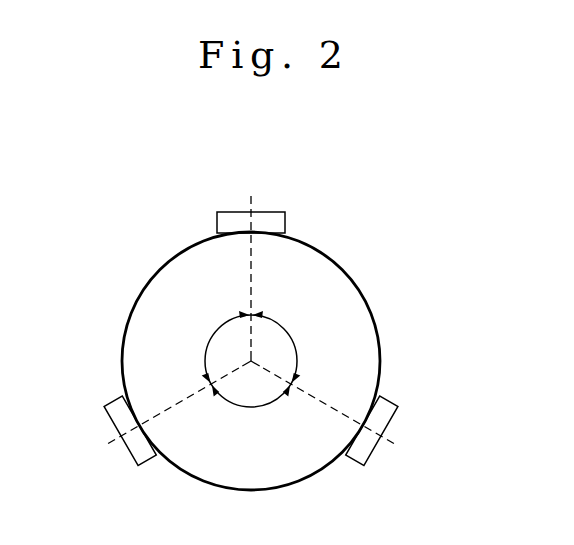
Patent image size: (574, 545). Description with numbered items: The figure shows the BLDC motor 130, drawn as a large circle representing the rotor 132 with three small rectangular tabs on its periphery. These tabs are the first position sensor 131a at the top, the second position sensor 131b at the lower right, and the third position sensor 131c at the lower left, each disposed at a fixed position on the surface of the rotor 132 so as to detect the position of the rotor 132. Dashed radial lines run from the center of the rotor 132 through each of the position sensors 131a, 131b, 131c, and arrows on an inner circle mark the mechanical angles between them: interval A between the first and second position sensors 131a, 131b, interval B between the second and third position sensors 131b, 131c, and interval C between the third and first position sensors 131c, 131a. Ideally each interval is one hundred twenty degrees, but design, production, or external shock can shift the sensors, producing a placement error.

The BLDC motor 130 is at (437, 146).
The first position sensor 131a is at (270, 211).
The second position sensor 131b is at (372, 454).
The third position sensor 131c is at (112, 400).
The rotor 132 is at (372, 312).